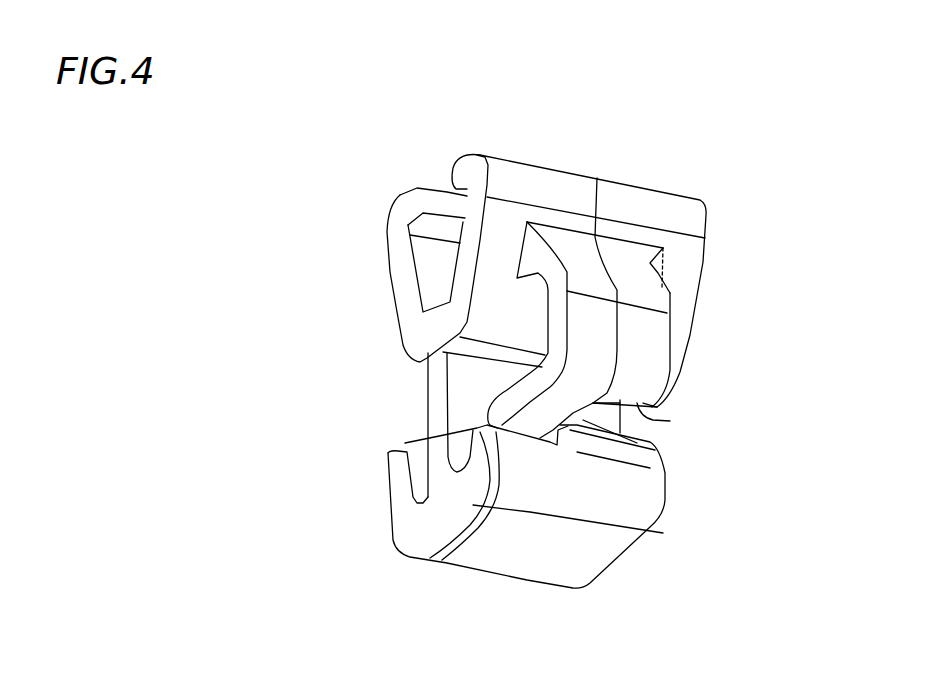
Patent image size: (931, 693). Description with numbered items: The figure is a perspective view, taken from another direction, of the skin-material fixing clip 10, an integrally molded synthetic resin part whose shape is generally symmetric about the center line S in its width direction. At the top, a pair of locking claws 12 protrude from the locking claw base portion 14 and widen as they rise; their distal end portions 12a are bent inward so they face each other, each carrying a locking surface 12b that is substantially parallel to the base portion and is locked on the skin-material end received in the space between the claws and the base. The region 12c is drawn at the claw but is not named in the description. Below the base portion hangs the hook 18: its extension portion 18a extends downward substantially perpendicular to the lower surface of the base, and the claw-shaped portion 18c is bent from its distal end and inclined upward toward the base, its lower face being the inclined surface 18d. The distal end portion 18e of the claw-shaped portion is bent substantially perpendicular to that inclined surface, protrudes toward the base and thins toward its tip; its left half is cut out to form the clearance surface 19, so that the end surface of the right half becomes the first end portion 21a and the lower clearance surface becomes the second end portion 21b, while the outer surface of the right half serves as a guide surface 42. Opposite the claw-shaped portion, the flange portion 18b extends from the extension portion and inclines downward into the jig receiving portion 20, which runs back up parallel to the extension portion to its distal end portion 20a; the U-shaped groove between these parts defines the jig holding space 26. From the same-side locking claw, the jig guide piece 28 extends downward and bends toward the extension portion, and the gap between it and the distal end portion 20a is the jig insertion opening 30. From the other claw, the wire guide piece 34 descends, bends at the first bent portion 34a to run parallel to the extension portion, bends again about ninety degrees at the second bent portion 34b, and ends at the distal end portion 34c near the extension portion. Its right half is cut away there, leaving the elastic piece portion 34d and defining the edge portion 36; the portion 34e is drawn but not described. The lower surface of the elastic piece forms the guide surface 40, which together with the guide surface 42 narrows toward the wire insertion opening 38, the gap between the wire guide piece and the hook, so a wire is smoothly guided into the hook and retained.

The skin-material fixing clip 10 is at (683, 143).
The locking claws 12 is at (400, 297).
The distal end portions 12a is at (403, 197).
The locking surface 12b is at (442, 228).
The hook slot 12c is at (427, 257).
The locking claw base portion 14 is at (433, 330).
The hook 18 is at (482, 537).
The extension portion 18a is at (472, 385).
The flange portion 18b is at (413, 547).
The claw-shaped portion 18c is at (470, 480).
The inclined surface 18d is at (610, 547).
The distal end portion 18e is at (660, 450).
The clearance surface 19 is at (577, 425).
The jig receiving portion 20 is at (400, 480).
The distal end portion 20a is at (397, 457).
The first end portion 21a is at (637, 433).
The second end portion 21b is at (425, 441).
The jig holding space 26 is at (418, 498).
The jig guide piece 28 is at (467, 388).
The jig insertion opening 30 is at (418, 436).
The wire guide piece 34 is at (650, 345).
The first bent portion 34a is at (663, 297).
The second bent portion 34b is at (652, 390).
The distal end portion 34c is at (522, 432).
The elastic piece portion 34d is at (512, 400).
The body face 34e is at (642, 323).
The edge portion 36 is at (670, 421).
The wire insertion opening 38 is at (637, 443).
The guide surface 40 is at (540, 415).
The guide surface 42 is at (620, 443).
The center line S is at (597, 198).